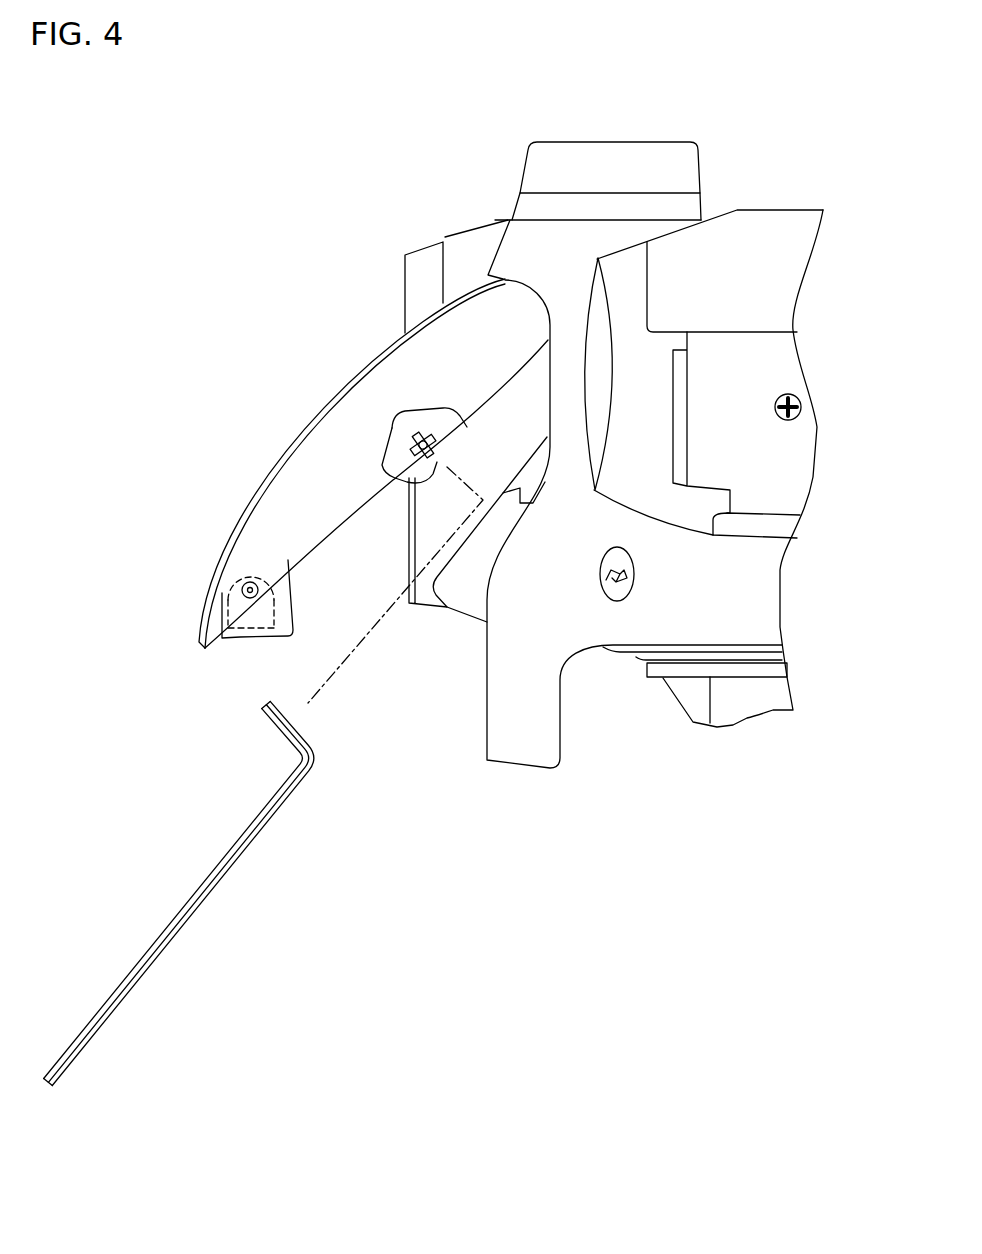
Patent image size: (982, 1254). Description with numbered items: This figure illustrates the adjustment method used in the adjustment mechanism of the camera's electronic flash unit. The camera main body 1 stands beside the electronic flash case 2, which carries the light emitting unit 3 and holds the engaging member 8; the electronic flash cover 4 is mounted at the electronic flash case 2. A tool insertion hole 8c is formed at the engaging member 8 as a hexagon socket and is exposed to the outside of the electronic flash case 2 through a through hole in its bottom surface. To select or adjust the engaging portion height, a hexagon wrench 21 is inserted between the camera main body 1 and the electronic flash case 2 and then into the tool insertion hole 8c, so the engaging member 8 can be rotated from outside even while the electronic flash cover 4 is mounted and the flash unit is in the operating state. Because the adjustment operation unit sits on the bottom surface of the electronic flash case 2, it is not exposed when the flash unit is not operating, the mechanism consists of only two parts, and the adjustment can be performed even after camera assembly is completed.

The camera main body 1 is at (463, 247).
The electronic flash case 2 is at (247, 638).
The light emitting unit 3 is at (222, 598).
The electronic flash cover 4 is at (233, 520).
The engaging member 8 is at (388, 447).
The tool insertion hole 8c is at (408, 503).
The hexagon wrench 21 is at (212, 878).